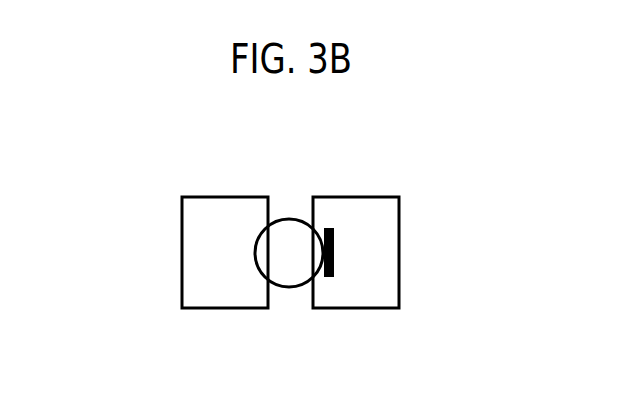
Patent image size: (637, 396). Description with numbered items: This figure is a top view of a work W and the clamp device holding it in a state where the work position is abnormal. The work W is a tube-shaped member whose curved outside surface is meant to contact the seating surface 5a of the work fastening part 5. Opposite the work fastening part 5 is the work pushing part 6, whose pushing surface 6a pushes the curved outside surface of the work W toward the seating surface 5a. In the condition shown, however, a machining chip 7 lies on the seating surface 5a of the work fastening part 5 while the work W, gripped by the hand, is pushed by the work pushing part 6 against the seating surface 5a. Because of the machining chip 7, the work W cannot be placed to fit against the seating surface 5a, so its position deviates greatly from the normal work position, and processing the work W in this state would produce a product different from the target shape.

The work fastening part 5 is at (383, 218).
The seating surface 5a is at (325, 228).
The work pushing part 6 is at (195, 270).
The pushing surface 6a is at (253, 253).
The machining chip 7 is at (335, 262).
The work W is at (289, 218).